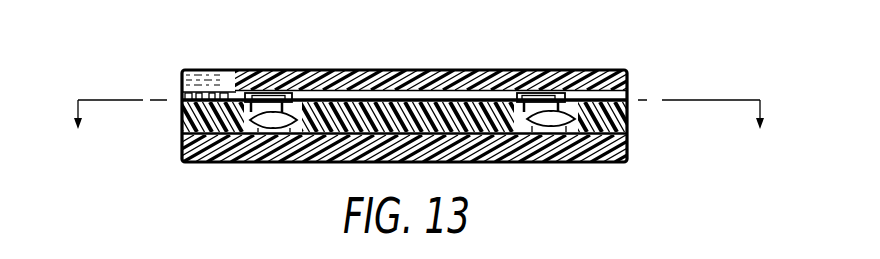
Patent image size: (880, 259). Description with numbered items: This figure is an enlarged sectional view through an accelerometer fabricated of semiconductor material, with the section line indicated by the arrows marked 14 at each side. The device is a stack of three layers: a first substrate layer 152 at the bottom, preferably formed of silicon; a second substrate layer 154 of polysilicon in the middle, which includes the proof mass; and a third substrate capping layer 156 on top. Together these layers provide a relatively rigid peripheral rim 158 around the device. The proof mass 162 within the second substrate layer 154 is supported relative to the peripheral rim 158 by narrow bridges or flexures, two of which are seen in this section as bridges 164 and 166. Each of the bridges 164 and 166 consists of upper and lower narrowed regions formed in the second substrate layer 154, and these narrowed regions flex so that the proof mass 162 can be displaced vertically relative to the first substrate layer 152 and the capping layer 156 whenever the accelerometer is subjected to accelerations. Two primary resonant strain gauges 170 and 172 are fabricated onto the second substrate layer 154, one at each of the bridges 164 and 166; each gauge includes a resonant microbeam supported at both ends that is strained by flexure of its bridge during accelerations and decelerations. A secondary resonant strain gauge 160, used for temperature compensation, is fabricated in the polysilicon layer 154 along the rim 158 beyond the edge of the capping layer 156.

The section line 14- 14 is at (421, 127).
The first substrate layer 152 is at (190, 142).
The second substrate layer 154 is at (183, 114).
The third substrate capping layer 156 is at (400, 83).
The peripheral rim 158 is at (612, 115).
The secondary resonant strain gauge 160 is at (207, 100).
The proof mass 162 is at (423, 115).
The bridge 164 is at (285, 100).
The bridge 166 is at (555, 95).
The primary resonant strain gauge 170 is at (258, 102).
The primary resonant strain gauge 172 is at (525, 97).